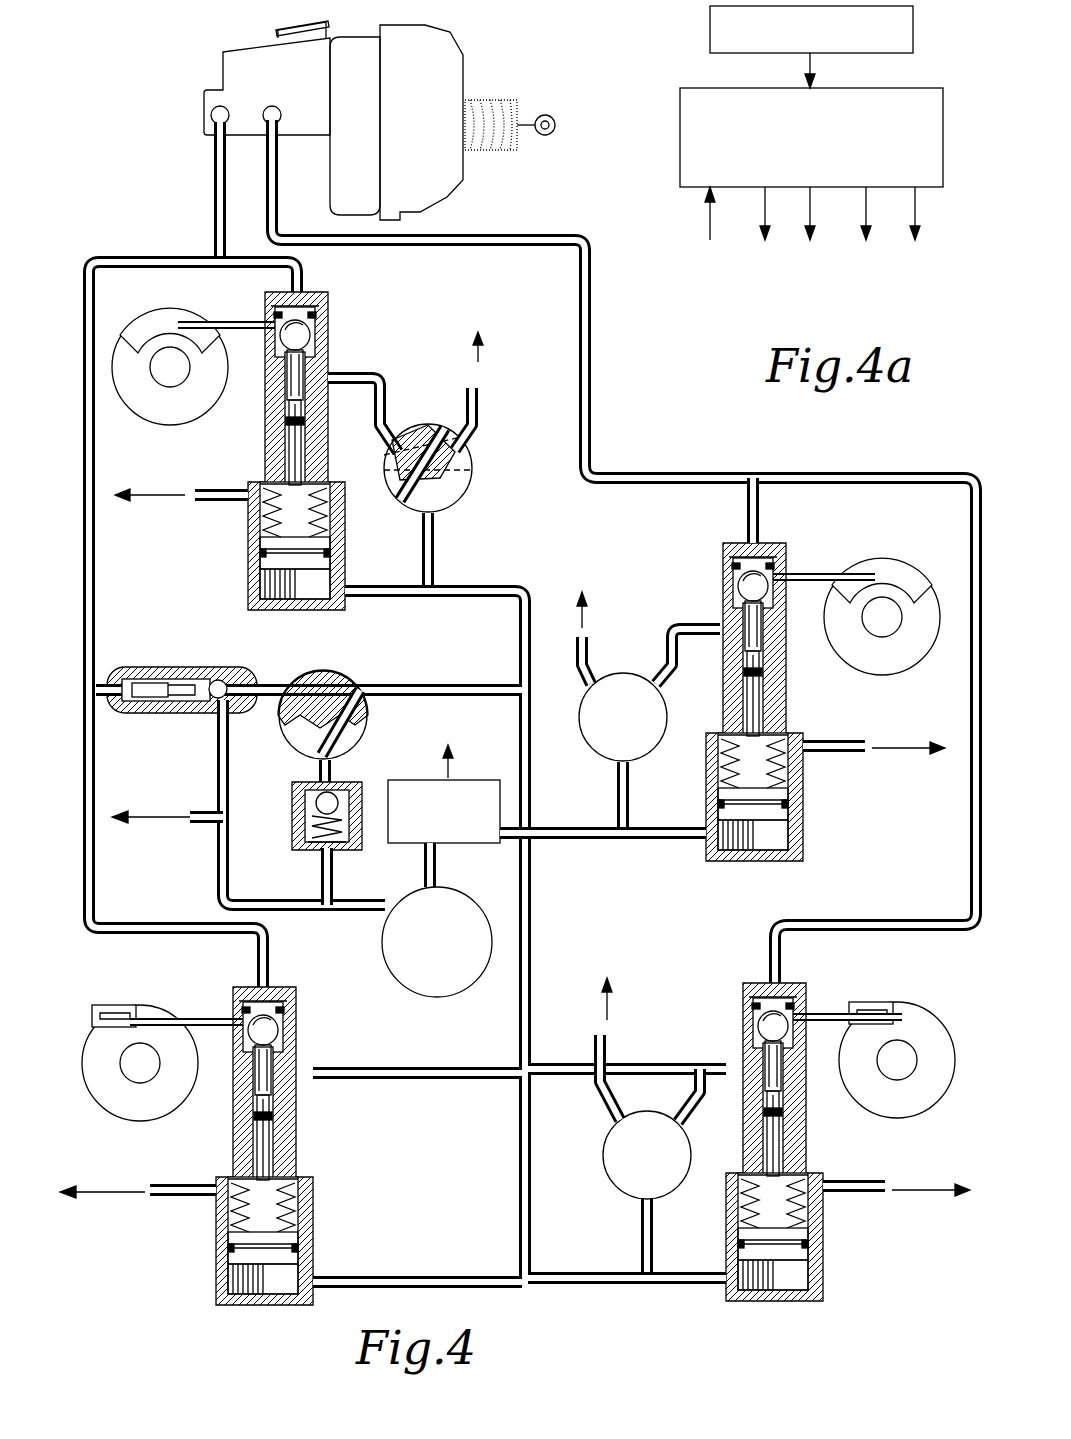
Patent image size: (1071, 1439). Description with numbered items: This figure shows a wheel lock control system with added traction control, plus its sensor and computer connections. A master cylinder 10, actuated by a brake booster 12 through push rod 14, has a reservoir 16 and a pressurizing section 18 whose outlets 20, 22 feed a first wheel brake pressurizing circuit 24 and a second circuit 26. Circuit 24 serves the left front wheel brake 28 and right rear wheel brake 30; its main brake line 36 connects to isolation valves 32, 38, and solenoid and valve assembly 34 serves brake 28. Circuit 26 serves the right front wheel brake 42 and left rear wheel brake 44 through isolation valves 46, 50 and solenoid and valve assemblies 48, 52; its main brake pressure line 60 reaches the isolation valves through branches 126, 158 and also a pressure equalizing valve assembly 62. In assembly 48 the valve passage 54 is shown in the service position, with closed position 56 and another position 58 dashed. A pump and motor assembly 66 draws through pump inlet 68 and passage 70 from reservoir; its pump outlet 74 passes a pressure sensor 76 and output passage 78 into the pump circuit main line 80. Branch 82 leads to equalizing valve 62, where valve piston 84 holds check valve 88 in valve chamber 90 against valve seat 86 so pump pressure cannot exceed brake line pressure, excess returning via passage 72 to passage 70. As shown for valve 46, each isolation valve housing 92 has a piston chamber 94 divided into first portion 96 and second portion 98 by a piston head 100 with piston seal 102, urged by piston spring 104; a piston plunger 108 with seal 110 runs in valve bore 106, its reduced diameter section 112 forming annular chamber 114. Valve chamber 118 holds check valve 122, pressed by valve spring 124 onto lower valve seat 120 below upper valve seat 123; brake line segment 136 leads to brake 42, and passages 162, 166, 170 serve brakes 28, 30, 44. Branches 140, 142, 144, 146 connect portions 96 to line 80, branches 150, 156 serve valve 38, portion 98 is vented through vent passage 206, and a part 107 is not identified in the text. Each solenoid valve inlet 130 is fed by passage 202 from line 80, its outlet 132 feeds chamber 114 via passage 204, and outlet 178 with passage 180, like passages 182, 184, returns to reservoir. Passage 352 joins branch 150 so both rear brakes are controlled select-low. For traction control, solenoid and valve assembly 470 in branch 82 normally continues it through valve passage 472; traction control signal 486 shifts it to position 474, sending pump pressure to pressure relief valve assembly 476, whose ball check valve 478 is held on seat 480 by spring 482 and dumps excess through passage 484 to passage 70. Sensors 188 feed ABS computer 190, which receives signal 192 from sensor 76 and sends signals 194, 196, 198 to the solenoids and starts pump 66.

In FIG. 4, the master cylinder 10 is at (210, 58).
In FIG. 4, the brake booster 12 is at (358, 55).
In FIG. 4, the push rod 14 is at (545, 114).
In FIG. 4, the reservoir 16 is at (250, 48).
In FIG. 4, the pressurizing section 18 is at (248, 122).
In FIG. 4, the outlet 20 is at (282, 122).
In FIG. 4, the outlet 22 is at (210, 115).
In FIG. 4, the first wheel brake pressurizing circuit 24 is at (500, 225).
In FIG. 4, the second wheel brake pressurizing circuit 26 is at (112, 255).
In FIG. 4, the left front wheel brake 28 is at (905, 575).
In FIG. 4, the right rear wheel brake 30 is at (910, 1020).
In FIG. 4, the isolation valve 32 is at (870, 738).
In FIG. 4, the solenoid operated valve 34 is at (608, 672).
In FIG. 4, the main brake line 36 is at (590, 460).
In FIG. 4, the isolation valve 38 is at (890, 1185).
In FIG. 4, the right front wheel brake 42 is at (155, 325).
In FIG. 4, the left rear wheel brake 44 is at (100, 1015).
In FIG. 4, the isolation valve 46 is at (280, 446).
In FIG. 4, the solenoid and valve assembly 48 is at (472, 490).
In FIG. 4, the isolation valve 50 is at (318, 1014).
In FIG. 4, the solenoid and valve assembly 52 is at (600, 1180).
In FIG. 4, the valve passage 54 is at (405, 518).
In FIG. 4, the closed position 56 is at (420, 435).
In FIG. 4, the another position 58 is at (450, 435).
In FIG. 4, the main brake pressure line 60 is at (89, 290).
In FIG. 4, the pressure equalizing valve assembly 62 is at (309, 670).
In FIG. 4, the pump and motor assembly 66 is at (432, 996).
In FIG. 4, the pump inlet 68 is at (385, 925).
In FIG. 4, the passage 70 is at (348, 912).
In FIG. 4, the passage 72 is at (215, 755).
In FIG. 4, the pump outlet 74 is at (445, 890).
In FIG. 4, the pressure sensor 76 is at (455, 845).
In FIG. 4, the output passage 78 is at (430, 862).
In FIG. 4, the pump circuit main line 80 is at (528, 740).
In FIG. 4, the branch 82 is at (450, 685).
In FIG. 4, the valve piston 84 is at (140, 668).
In FIG. 4, the valve seat 86 is at (235, 703).
In FIG. 4, the check valve 88 is at (220, 680).
In FIG. 4, the valve chamber 90 is at (200, 712).
In FIG. 4, the isolation valve housing 92 is at (262, 455).
In FIG. 4, the piston chamber 94 is at (255, 598).
In FIG. 4, the first portion 96 is at (320, 600).
In FIG. 4, the second portion 98 is at (262, 555).
In FIG. 4, the piston head 100 is at (300, 572).
In FIG. 4, the piston seal 102 is at (330, 532).
In FIG. 4, the piston spring 104 is at (326, 500).
In FIG. 4, the valve bore 106 is at (305, 470).
In FIG. 4, the seal 107 is at (268, 516).
In FIG. 4, the piston plunger 108 is at (298, 440).
In FIG. 4, the seal 110 is at (306, 420).
In FIG. 4, the reduced diameter section 112 is at (286, 372).
In FIG. 4, the annular chamber 114 is at (288, 396).
In FIG. 4, the valve chamber 118 is at (318, 316).
In FIG. 4, the lower valve seat 120 is at (318, 360).
In FIG. 4, the check valve 122 is at (312, 338).
In FIG. 4, the upper valve seat 123 is at (280, 318).
In FIG. 4, the valve spring 124 is at (320, 303).
In FIG. 4, the branch 126 is at (298, 270).
In FIG. 4, the solenoid operated valve inlet 130 is at (435, 512).
In FIG. 4, the solenoid valve outlet 132 is at (378, 455).
In FIG. 4, the brake line segment 136 is at (190, 320).
In FIG. 4, the branch 140 is at (400, 598).
In FIG. 4, the branch 142 is at (550, 845).
In FIG. 4, the branch 144 is at (612, 1285).
In FIG. 4, the branch 146 is at (410, 1278).
In FIG. 4, the pump main line branch 150 is at (710, 1067).
In FIG. 4, the branch 156 is at (768, 945).
In FIG. 4, the branch 158 is at (268, 965).
In FIG. 4, the passage 162 is at (855, 570).
In FIG. 4, the passage 166 is at (845, 1015).
In FIG. 4, the passage 170 is at (170, 1015).
In FIG. 4, the valve outlet 178 is at (478, 445).
In FIG. 4, the passage 180 is at (485, 385).
In FIG. 4, the passage 182 is at (588, 660).
In FIG. 4, the passage 184 is at (596, 1045).
In FIG. 4A, the sensors 188 is at (712, 36).
In FIG. 4A, the ABS computer 190 is at (685, 127).
In FIG. 4, the signal 192 is at (462, 775).
In FIG. 4A, the signal 192 is at (705, 222).
In FIG. 4A, the signal 194 is at (762, 196).
In FIG. 4A, the signal 196 is at (808, 196).
In FIG. 4A, the signal 198 is at (864, 196).
In FIG. 4, the passage 202 is at (432, 568).
In FIG. 4, the passage 204 is at (688, 656).
In FIG. 4, the vent passage 206 is at (205, 500).
In FIG. 4, the passage 352 is at (425, 1078).
In FIG. 4, the traction control solenoid and valve assembly 470 is at (348, 691).
In FIG. 4, the valve passage 472 is at (300, 685).
In FIG. 4, the position 474 is at (360, 735).
In FIG. 4, the pressure relief valve assembly 476 is at (371, 823).
In FIG. 4, the ball check valve 478 is at (318, 808).
In FIG. 4, the seat 480 is at (345, 838).
In FIG. 4, the spring 482 is at (348, 848).
In FIG. 4, the passage 484 is at (322, 870).
In FIG. 4A, the traction control signal 486 is at (913, 196).